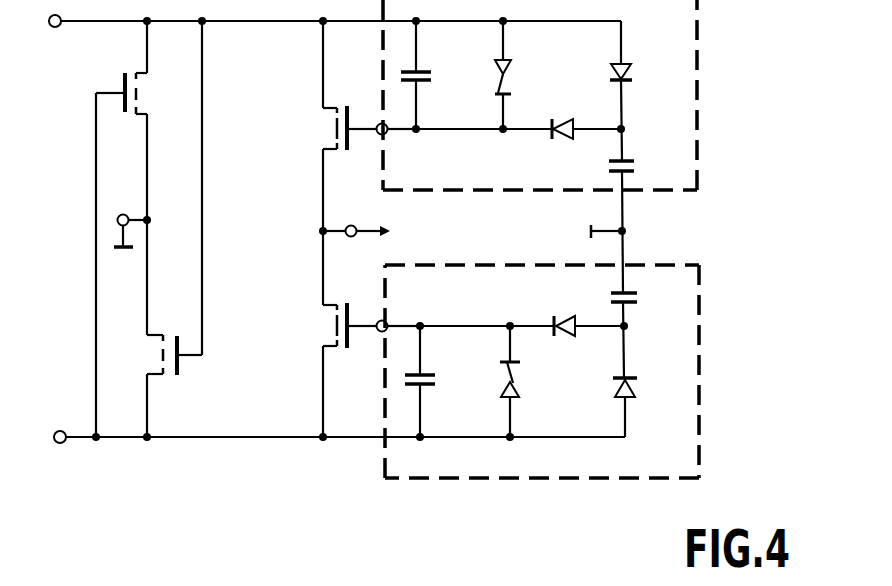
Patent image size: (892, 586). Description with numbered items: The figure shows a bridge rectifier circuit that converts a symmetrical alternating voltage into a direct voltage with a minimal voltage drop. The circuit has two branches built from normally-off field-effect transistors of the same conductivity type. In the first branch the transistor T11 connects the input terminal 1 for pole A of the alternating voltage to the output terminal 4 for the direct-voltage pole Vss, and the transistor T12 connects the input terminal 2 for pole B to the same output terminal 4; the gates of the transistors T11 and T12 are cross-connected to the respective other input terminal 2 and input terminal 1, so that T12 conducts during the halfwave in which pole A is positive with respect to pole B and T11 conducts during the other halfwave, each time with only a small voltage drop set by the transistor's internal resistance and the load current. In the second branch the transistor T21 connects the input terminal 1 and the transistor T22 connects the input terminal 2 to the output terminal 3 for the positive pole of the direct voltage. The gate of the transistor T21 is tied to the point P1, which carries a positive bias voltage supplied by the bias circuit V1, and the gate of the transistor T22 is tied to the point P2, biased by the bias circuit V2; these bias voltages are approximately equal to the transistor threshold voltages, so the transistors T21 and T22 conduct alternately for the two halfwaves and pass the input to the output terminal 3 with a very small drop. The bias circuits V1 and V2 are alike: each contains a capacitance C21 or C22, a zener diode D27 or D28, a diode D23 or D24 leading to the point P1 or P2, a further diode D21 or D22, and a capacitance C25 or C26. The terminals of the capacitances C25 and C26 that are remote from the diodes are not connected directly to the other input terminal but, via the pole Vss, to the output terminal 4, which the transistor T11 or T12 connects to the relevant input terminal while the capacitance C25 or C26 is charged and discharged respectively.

The input terminal 1 is at (60, 28).
The input terminal 2 is at (49, 419).
The output terminal 3 is at (353, 225).
The output terminal 4 is at (125, 212).
The transistor T11 is at (140, 94).
The transistor T12 is at (160, 355).
The transistor T21 is at (332, 128).
The transistor T22 is at (332, 325).
The point P1 is at (378, 124).
The point P2 is at (378, 321).
The capacitance C21 is at (433, 76).
The capacitance C22 is at (437, 378).
The capacitance C25 is at (636, 166).
The capacitance C26 is at (638, 298).
The diode D21 is at (632, 72).
The diode D22 is at (636, 390).
The diode D23 is at (566, 140).
The diode D24 is at (565, 303).
The zener diode D27 is at (512, 69).
The zener diode D28 is at (521, 389).
The pole of the direct voltage Vss is at (581, 233).
The bias circuit V1 is at (704, 108).
The bias circuit V2 is at (705, 328).